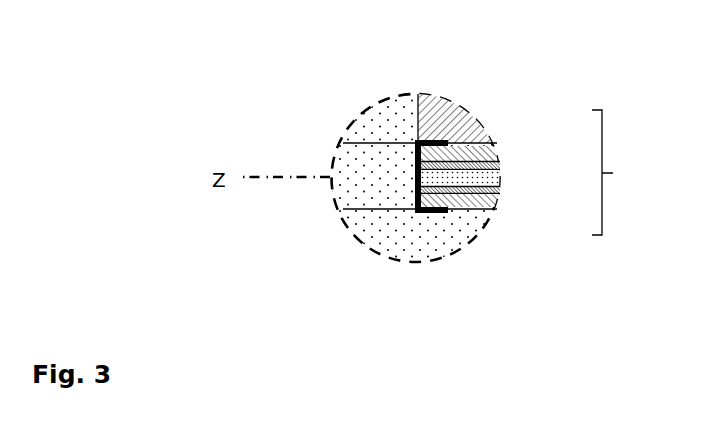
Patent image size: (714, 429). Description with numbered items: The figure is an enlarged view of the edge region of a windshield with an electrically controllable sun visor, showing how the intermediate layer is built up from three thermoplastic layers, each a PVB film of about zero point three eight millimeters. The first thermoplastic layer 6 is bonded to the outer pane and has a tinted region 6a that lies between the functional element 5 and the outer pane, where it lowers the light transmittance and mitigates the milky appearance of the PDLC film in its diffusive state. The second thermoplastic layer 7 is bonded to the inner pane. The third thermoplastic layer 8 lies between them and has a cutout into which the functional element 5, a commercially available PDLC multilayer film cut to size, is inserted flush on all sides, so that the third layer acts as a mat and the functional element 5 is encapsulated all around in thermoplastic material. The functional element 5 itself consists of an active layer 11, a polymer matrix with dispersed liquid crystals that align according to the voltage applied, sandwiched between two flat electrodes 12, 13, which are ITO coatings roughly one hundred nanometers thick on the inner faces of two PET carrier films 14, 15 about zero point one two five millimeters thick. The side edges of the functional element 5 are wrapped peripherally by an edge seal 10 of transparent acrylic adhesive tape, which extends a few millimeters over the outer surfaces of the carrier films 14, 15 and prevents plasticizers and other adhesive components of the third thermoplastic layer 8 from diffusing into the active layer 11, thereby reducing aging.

The functional element 5 is at (617, 172).
The first thermoplastic layer 6 is at (392, 127).
The tinted region 6a is at (465, 110).
The second thermoplastic layer 7 is at (452, 242).
The third thermoplastic layer 8 is at (350, 160).
The edge seal 10 is at (418, 142).
The active layer 11 is at (473, 175).
The flat electrode 12 is at (500, 162).
The flat electrode 13 is at (500, 187).
The carrier film 14 is at (497, 145).
The carrier film 15 is at (480, 202).